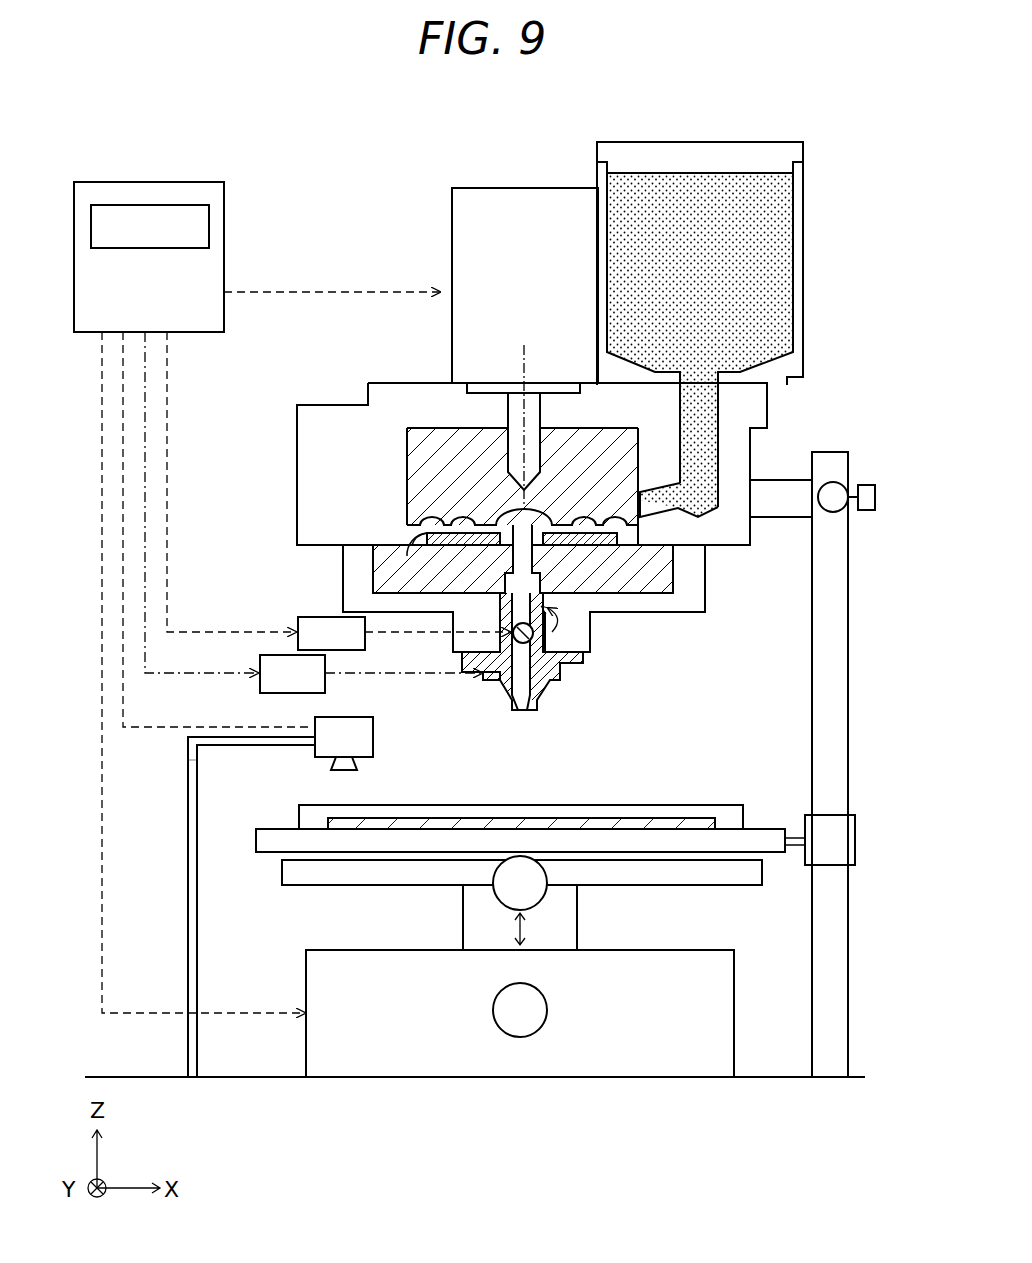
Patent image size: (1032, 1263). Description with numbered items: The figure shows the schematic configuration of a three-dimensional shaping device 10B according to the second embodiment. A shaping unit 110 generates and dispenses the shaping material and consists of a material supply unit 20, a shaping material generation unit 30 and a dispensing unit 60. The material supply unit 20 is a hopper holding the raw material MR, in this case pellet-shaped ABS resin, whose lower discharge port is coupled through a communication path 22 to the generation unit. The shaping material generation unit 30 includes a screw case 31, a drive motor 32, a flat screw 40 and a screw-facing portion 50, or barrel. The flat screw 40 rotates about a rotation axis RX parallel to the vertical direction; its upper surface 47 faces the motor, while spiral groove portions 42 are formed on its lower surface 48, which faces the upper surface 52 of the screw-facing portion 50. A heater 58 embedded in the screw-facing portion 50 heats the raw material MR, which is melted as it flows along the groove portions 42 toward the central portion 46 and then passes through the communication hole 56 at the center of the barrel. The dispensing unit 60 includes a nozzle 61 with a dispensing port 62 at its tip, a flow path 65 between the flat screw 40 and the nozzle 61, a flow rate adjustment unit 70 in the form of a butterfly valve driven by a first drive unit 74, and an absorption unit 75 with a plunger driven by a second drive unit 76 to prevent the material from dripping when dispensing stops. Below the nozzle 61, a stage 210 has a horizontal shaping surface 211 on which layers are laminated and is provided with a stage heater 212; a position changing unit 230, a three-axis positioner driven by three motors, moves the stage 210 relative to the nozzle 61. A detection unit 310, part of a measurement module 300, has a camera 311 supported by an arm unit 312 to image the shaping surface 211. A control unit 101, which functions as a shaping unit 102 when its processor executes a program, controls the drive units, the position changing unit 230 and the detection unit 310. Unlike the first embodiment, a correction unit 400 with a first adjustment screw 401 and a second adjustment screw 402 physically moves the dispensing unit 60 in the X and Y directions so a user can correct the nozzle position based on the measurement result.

The three-dimensional shaping device 10B is at (160, 112).
The control unit 101 is at (198, 182).
The shaping unit 102 is at (209, 226).
The shaping unit 110 is at (405, 186).
The drive motor 32 is at (452, 212).
The shaping material generation unit 30 is at (380, 284).
The rotation axis RX is at (514, 346).
The screw case 31 is at (415, 386).
The flat screw 40 is at (418, 458).
The upper surface 47 is at (440, 443).
The central portion 46 is at (498, 498).
The groove portions 42 is at (452, 510).
The upper surface 52 is at (420, 528).
The lower surface 48 is at (405, 550).
The screw-facing portion 50 is at (422, 576).
The communication hole 56 is at (660, 591).
The heater 58 is at (655, 574).
The material supply unit 20 is at (803, 257).
The raw material MR is at (770, 222).
The communication path 22 is at (697, 446).
The dispensing unit 60 is at (660, 664).
The nozzle 61 is at (552, 708).
The dispensing port 62 is at (550, 706).
The flow path 65 is at (550, 603).
The flow rate adjustment unit 70 is at (518, 648).
The first drive unit 74 is at (298, 618).
The absorption unit 75 is at (480, 682).
The second drive unit 76 is at (268, 693).
The correction unit 400 is at (880, 395).
The first adjustment screw 401 is at (868, 484).
The second adjustment screw 402 is at (832, 481).
The stage 210 is at (698, 805).
The shaping surface 211 is at (610, 805).
The stage heater 212 is at (393, 830).
The position changing unit 230 is at (758, 916).
The camera 311 is at (380, 752).
The arm unit 312 is at (200, 780).
The detection unit 310 is at (186, 768).
The measurement module 300 is at (156, 807).